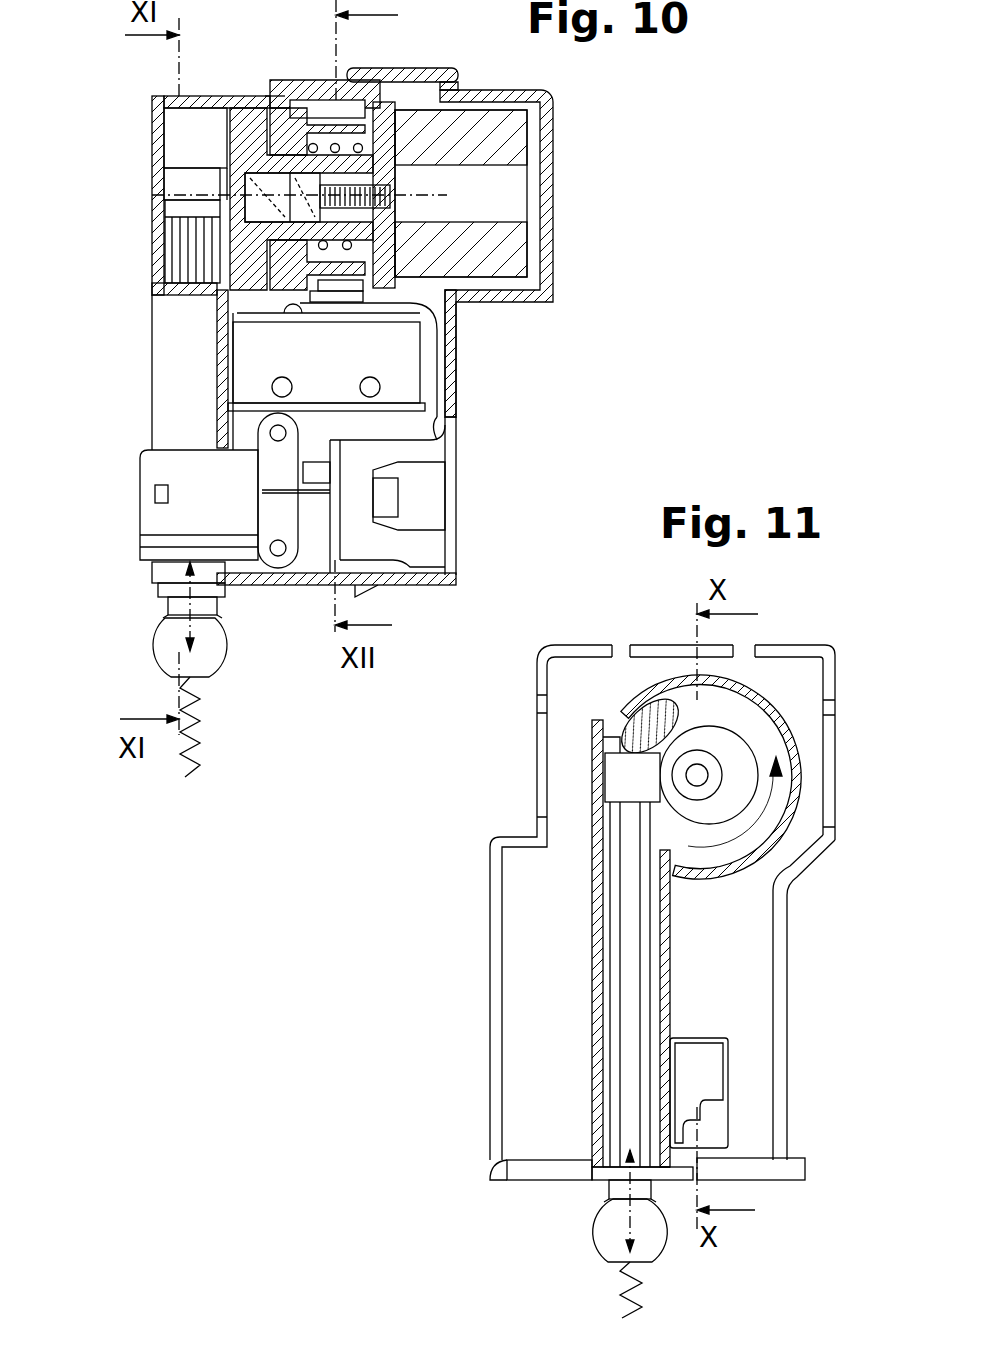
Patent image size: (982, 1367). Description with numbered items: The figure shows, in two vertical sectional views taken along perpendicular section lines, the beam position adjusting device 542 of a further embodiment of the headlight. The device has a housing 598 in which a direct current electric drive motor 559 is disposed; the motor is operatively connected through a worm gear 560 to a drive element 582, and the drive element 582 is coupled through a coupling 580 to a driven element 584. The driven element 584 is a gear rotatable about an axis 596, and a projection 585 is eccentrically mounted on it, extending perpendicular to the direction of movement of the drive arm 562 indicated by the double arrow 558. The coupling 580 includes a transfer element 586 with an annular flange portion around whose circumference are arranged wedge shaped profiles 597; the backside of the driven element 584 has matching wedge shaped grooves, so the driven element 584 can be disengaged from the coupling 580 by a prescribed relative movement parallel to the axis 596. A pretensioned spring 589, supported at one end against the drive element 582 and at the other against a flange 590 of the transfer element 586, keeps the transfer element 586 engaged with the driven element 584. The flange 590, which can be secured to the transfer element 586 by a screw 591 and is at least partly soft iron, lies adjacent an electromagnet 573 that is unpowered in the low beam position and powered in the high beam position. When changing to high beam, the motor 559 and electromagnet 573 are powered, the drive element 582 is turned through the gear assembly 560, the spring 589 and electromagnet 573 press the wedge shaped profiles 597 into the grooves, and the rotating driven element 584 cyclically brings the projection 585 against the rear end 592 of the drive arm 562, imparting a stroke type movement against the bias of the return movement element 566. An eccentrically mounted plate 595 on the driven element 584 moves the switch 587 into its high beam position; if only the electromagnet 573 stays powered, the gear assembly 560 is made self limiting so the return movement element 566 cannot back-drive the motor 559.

In FIG. 10, the beam position adjusting device 542 is at (578, 392).
In FIG. 11, the beam position adjusting device 542 is at (810, 928).
In FIG. 10, the double arrow 558 is at (217, 628).
In FIG. 11, the double arrow 558 is at (627, 1197).
In FIG. 10, the direct current electric drive motor 559 is at (385, 425).
In FIG. 10, the worm gear 560 is at (392, 302).
In FIG. 10, the drive arm 562 is at (167, 640).
In FIG. 11, the drive arm 562 is at (623, 1250).
In FIG. 10, the return movement element 566 is at (195, 707).
In FIG. 11, the return movement element 566 is at (637, 1275).
In FIG. 10, the electromagnet 573 is at (500, 140).
In FIG. 10, the coupling 580 is at (198, 187).
In FIG. 10, the drive element 582 is at (323, 117).
In FIG. 10, the driven element 584 is at (242, 135).
In FIG. 10, the projection 585 is at (190, 125).
In FIG. 11, the projection 585 is at (643, 727).
In FIG. 10, the transfer element 586 is at (232, 287).
In FIG. 10, the switch 587 is at (253, 365).
In FIG. 10, the pretensioned spring 589 is at (362, 96).
In FIG. 10, the flange 590 is at (390, 127).
In FIG. 10, the screw 591 is at (272, 95).
In FIG. 10, the rear end 592 is at (207, 167).
In FIG. 11, the rear end 592 is at (660, 713).
In FIG. 10, the eccentrically mounted plate 595 is at (293, 302).
In FIG. 10, the axis 596 is at (152, 195).
In FIG. 10, the wedge shaped profiles 597 is at (268, 215).
In FIG. 10, the housing 598 is at (357, 584).
In FIG. 11, the housing 598 is at (665, 995).